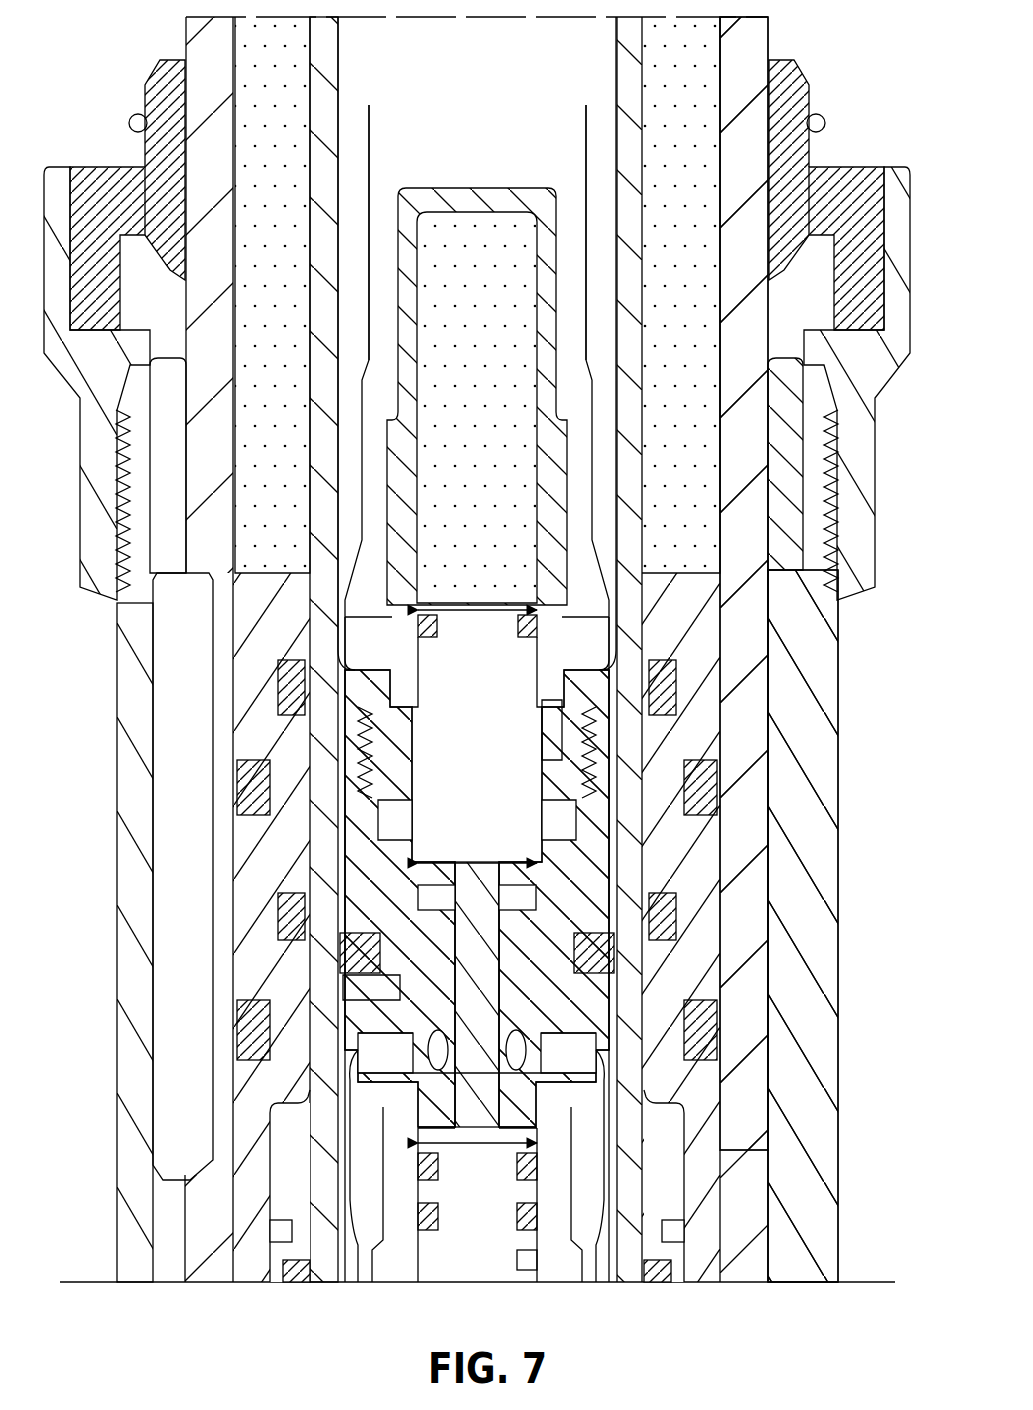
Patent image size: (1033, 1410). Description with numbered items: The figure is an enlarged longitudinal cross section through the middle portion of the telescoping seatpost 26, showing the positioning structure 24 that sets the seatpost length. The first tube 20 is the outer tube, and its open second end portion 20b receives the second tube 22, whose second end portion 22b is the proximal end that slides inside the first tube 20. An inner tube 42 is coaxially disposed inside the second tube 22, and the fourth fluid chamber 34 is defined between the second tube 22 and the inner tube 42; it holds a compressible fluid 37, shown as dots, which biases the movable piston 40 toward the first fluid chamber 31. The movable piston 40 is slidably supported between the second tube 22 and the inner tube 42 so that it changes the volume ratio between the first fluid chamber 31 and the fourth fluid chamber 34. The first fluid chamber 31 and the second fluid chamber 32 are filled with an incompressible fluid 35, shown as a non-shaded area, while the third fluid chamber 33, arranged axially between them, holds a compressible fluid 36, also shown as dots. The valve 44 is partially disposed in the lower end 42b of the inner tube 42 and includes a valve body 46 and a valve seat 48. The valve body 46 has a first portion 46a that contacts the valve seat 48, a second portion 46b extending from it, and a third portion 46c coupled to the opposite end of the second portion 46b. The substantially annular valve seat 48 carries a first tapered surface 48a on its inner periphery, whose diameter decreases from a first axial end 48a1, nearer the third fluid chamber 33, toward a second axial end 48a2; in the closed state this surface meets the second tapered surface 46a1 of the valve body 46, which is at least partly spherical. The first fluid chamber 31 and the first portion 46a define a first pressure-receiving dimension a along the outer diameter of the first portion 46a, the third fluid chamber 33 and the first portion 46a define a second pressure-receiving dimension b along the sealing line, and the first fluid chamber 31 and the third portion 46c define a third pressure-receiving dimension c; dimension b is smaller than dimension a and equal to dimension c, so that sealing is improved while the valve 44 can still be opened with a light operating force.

The first tube 20 is at (845, 902).
The second end portion of first tube 20b is at (840, 658).
The second tube 22 is at (775, 790).
The second end portion of second tube 22b is at (770, 1218).
The positioning structure 24 is at (688, 540).
The telescoping seatpost 26 is at (892, 775).
The first fluid chamber 31 is at (612, 1140).
The second fluid chamber 32 is at (595, 335).
The third fluid chamber 33 is at (455, 270).
The fourth fluid chamber 34 is at (265, 60).
The incompressible fluid 35 is at (560, 65).
The compressible fluid 36 is at (508, 247).
The compressible fluid 37 is at (265, 120).
The movable piston 40 is at (277, 635).
The inner tube 42 is at (650, 437).
The lower end of inner tube 42b is at (648, 1172).
The valve 44 is at (72, 805).
The valve body 46 is at (375, 840).
The first portion of valve body 46a is at (562, 745).
The second tapered surface 46a1 is at (433, 885).
The second portion of valve body 46b is at (640, 990).
The third portion of valve body 46c is at (527, 1262).
The valve seat 48 is at (365, 870).
The first tapered surface 48a is at (552, 828).
The first axial end 48a1 is at (405, 822).
The second axial end 48a2 is at (520, 885).
The first pressure-receiving dimension a is at (480, 860).
The second pressure-receiving dimension b is at (485, 615).
The third pressure-receiving dimension c is at (485, 1145).